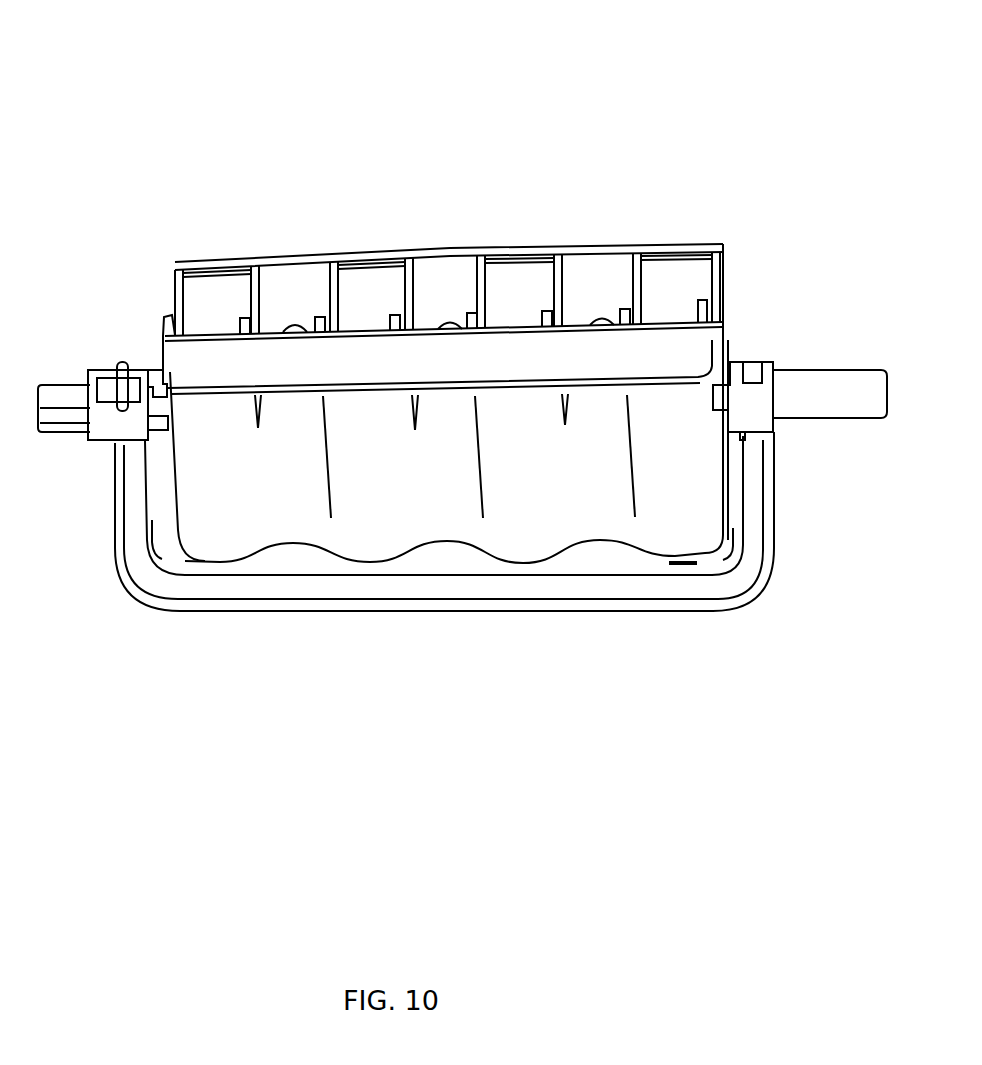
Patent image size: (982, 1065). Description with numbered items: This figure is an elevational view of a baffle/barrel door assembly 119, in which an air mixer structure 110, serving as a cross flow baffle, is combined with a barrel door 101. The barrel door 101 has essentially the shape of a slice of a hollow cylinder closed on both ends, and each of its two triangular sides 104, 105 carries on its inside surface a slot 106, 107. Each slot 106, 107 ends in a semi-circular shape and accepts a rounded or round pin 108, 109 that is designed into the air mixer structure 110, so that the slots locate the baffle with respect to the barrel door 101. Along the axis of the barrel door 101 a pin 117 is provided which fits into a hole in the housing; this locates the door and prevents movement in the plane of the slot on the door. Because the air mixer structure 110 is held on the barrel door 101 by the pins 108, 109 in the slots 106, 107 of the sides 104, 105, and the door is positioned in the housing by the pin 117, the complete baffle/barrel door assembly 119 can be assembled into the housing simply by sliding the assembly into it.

The barrel door 101 is at (448, 570).
The triangular side 104 is at (738, 350).
The triangular side 105 is at (155, 383).
The slot 106 is at (740, 365).
The slot 107 is at (152, 370).
The pin 108 is at (745, 433).
The pin 109 is at (172, 415).
The air mixer structure 110 is at (595, 292).
The pin 117 is at (840, 398).
The baffle/barrel door assembly 119 is at (400, 228).